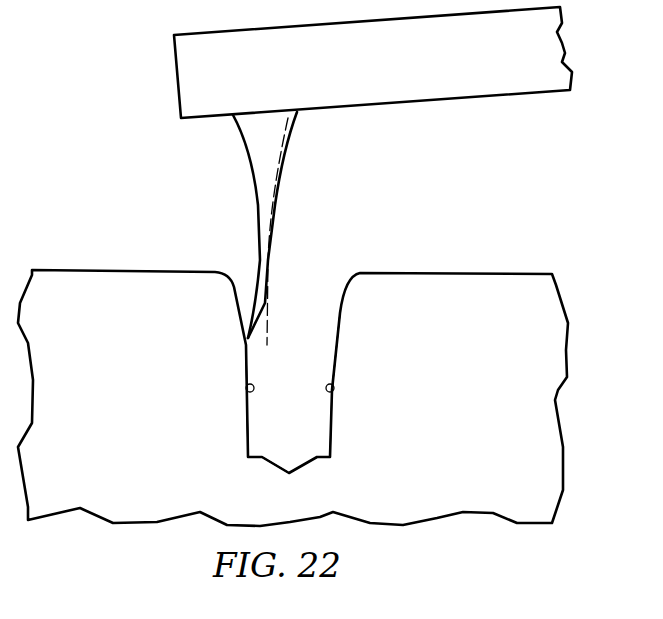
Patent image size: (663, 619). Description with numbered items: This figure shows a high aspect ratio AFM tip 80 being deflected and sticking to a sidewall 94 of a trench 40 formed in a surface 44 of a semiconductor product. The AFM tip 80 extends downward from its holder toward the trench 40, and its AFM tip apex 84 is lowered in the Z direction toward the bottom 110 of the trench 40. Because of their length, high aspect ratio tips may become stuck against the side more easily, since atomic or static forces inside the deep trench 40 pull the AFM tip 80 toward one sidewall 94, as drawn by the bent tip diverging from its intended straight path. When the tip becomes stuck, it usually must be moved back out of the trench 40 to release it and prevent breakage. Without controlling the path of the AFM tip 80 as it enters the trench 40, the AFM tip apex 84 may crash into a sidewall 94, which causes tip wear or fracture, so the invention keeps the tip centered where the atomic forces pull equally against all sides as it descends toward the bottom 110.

The AFM tip 80 is at (283, 165).
The AFM tip apex 84 is at (250, 337).
The surface 44 is at (157, 270).
The trench 40 is at (308, 281).
The sidewall 94 is at (246, 388).
The bottom 110 is at (270, 460).